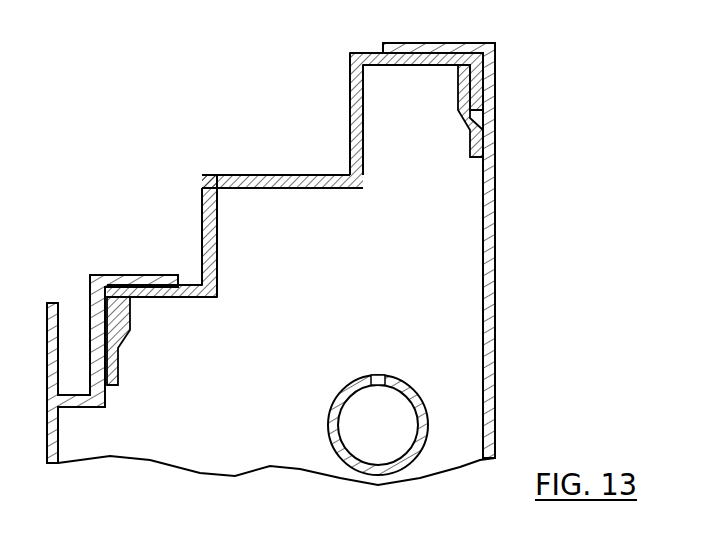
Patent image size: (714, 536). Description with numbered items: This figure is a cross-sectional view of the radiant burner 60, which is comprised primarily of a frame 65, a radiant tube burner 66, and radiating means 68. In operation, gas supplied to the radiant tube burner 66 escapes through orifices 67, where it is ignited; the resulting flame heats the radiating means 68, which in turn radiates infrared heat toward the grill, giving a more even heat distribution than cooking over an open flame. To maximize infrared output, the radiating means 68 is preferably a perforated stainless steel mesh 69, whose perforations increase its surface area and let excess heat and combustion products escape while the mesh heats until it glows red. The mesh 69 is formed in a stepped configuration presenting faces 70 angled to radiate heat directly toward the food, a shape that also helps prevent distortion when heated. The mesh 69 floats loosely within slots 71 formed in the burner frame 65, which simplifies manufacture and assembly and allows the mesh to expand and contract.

The radiant burner 60 is at (245, 428).
The frame 65 is at (491, 233).
The radiant tube burner 66 is at (422, 431).
The orifices 67 is at (378, 378).
The radiating means 68 is at (205, 185).
The perforated stainless steel mesh 69 is at (352, 90).
The faces 70 is at (202, 222).
The slots 71 is at (122, 330).